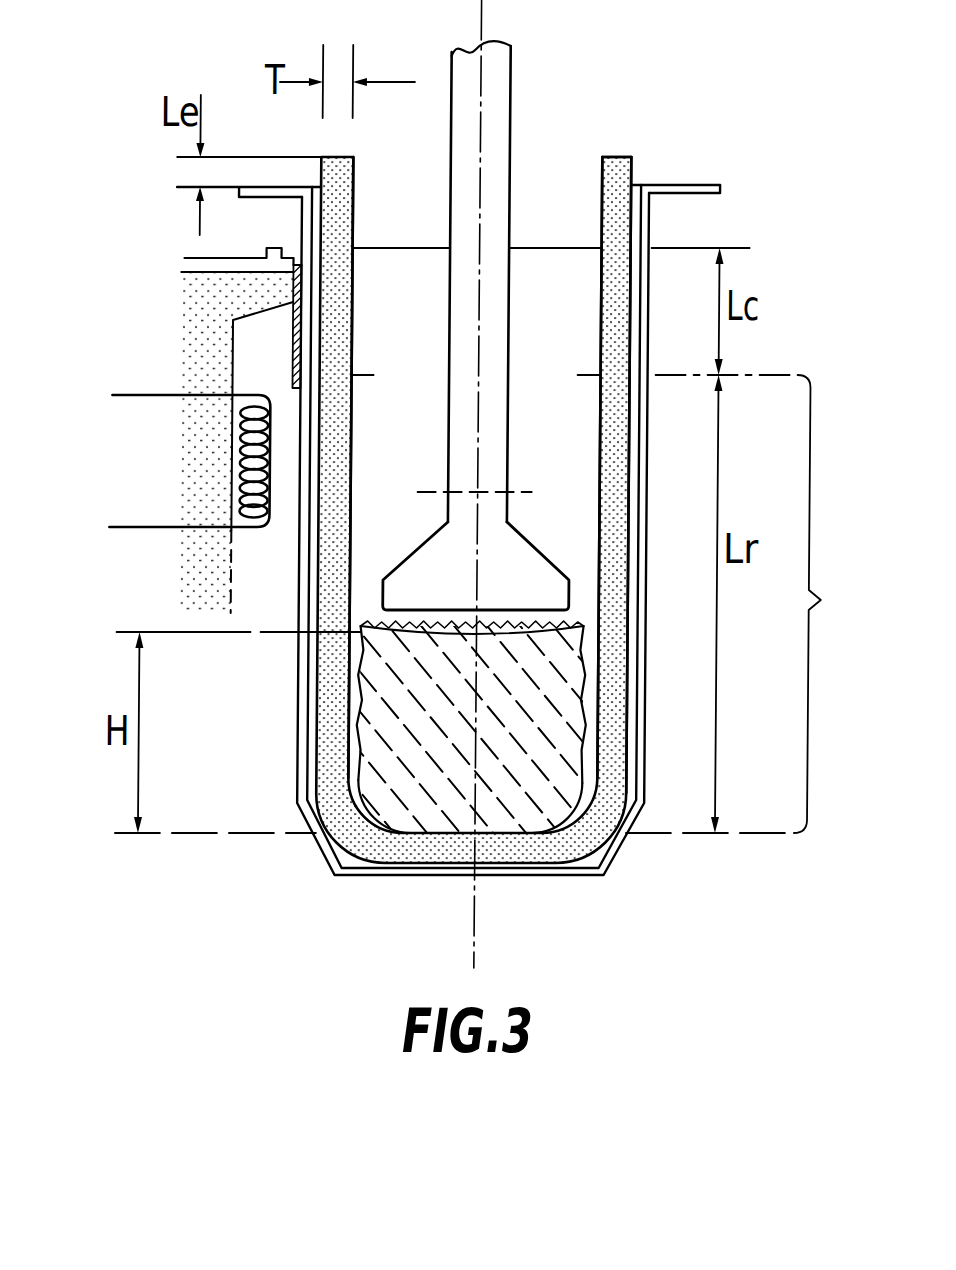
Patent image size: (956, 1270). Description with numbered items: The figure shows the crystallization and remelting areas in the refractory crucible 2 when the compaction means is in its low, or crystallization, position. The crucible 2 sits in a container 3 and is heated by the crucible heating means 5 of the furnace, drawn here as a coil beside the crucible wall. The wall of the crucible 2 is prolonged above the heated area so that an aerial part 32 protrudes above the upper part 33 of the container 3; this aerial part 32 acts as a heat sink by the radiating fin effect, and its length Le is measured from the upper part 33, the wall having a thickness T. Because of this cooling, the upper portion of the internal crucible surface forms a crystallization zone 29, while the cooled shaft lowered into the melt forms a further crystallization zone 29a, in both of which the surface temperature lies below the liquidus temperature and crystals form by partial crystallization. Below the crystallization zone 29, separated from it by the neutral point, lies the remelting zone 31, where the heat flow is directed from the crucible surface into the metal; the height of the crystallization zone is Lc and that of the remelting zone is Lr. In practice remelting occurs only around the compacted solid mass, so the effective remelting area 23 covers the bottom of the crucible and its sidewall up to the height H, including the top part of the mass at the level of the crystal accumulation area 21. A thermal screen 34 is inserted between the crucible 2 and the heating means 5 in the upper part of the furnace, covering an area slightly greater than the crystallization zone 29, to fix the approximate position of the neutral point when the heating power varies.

The refractory crucible 2 is at (336, 717).
The container 3 is at (321, 843).
The crucible heating means 5 is at (243, 458).
The crystal accumulation area 21 is at (574, 623).
The effective remelting area 23 is at (358, 810).
The crystallization zone 29 is at (362, 343).
The crystallization zone 29a is at (440, 320).
The remelting zone 31 is at (827, 604).
The aerial part of the crucible 32 is at (607, 200).
The upper part of the container 33 is at (651, 184).
The thermal screen 34 is at (292, 333).